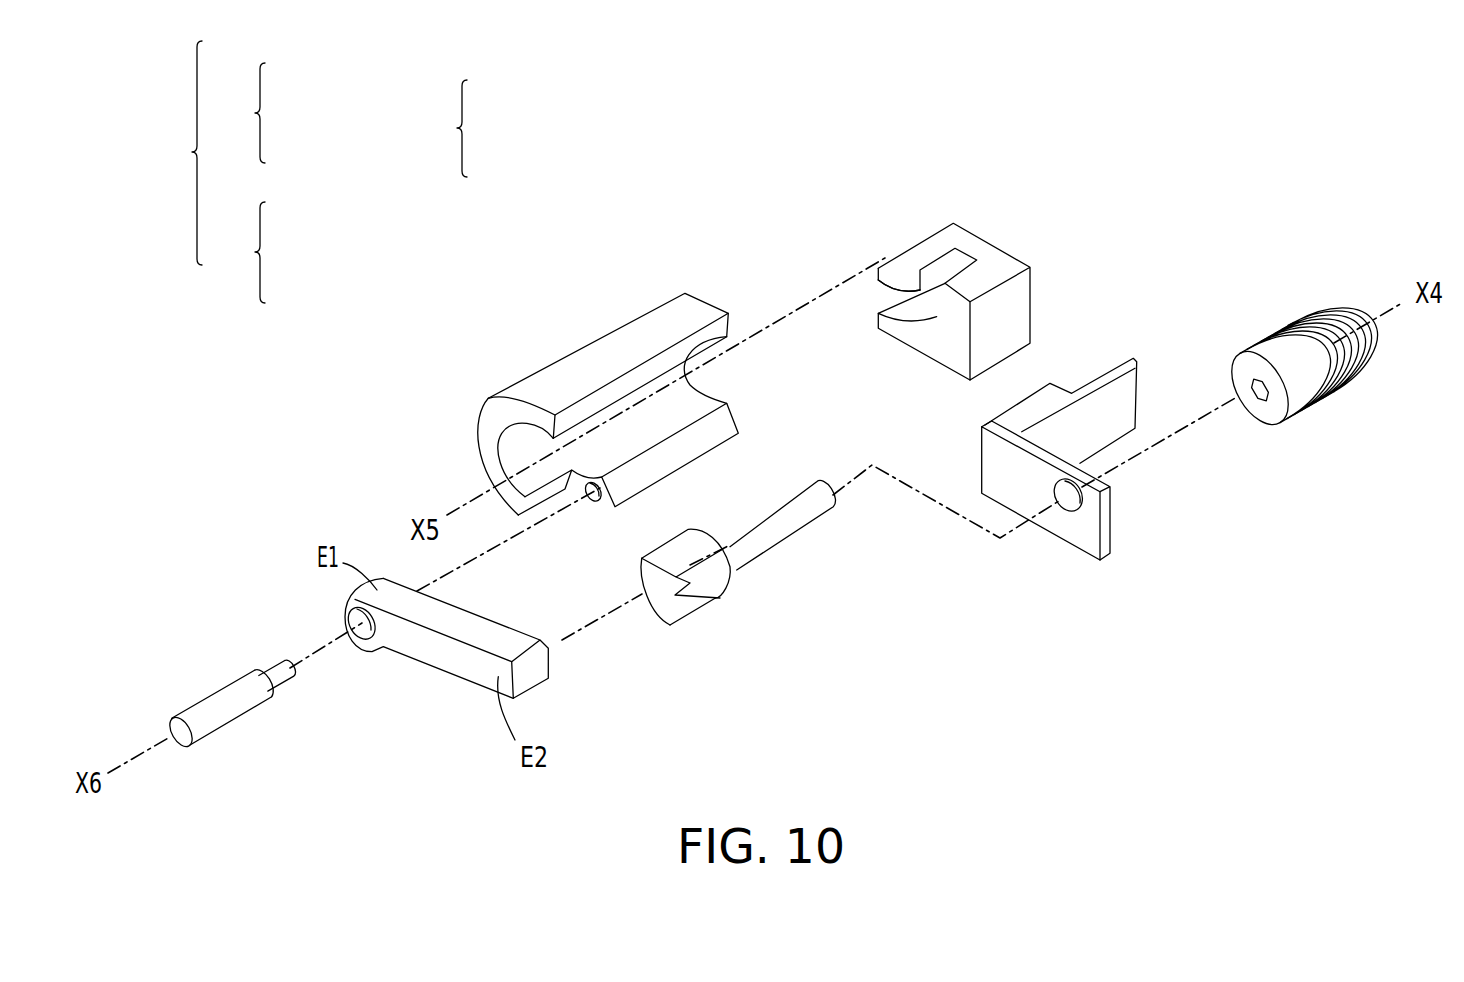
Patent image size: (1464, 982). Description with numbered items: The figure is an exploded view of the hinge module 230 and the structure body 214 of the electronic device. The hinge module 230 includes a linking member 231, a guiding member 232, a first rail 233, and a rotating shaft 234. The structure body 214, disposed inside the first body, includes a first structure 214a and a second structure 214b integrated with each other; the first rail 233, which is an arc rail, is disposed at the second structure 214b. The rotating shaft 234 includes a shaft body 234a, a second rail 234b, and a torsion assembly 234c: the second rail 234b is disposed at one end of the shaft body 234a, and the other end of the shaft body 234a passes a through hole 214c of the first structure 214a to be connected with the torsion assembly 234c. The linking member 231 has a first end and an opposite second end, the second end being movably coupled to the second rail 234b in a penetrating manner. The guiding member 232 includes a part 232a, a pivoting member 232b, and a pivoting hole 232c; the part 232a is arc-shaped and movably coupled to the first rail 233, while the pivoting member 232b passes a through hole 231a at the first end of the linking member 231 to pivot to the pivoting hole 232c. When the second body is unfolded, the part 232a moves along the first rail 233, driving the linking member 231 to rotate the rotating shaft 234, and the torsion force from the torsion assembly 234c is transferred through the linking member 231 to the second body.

The hinge module 230 is at (198, 149).
The linking member 231 is at (386, 661).
The through hole 231a is at (353, 627).
The guiding member 232 is at (266, 115).
The part 232a is at (608, 433).
The pivoting member 232b is at (215, 702).
The pivoting hole 232c is at (594, 496).
The first rail 233 is at (912, 313).
The rotating shaft 234 is at (266, 255).
The shaft body 234a is at (738, 587).
The second rail 234b is at (687, 600).
The torsion assembly 234c is at (1338, 378).
The structure body 214 is at (467, 129).
The first structure 214a is at (1102, 488).
The second structure 214b is at (964, 283).
The through hole 214c is at (1074, 506).